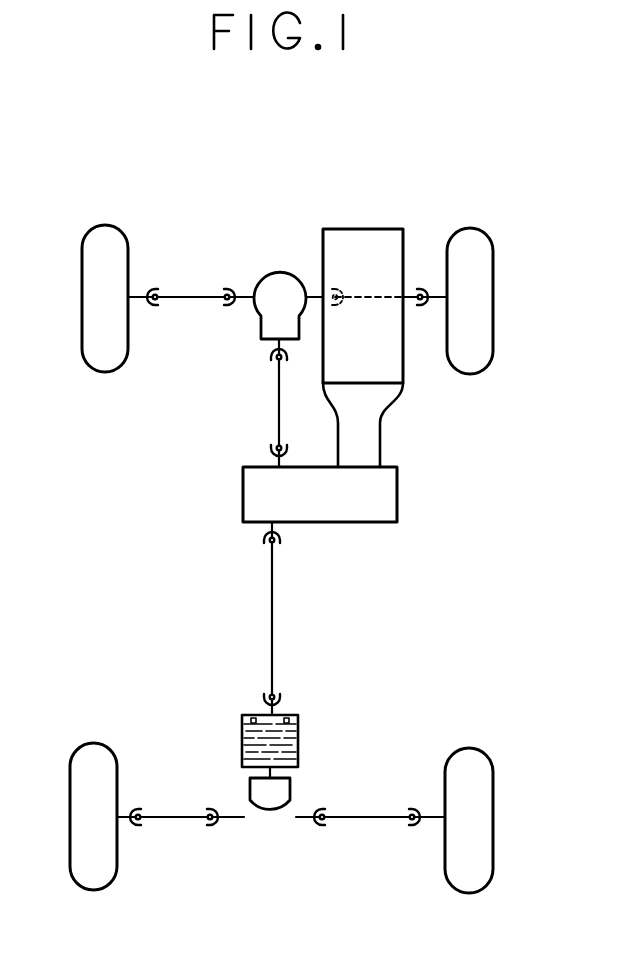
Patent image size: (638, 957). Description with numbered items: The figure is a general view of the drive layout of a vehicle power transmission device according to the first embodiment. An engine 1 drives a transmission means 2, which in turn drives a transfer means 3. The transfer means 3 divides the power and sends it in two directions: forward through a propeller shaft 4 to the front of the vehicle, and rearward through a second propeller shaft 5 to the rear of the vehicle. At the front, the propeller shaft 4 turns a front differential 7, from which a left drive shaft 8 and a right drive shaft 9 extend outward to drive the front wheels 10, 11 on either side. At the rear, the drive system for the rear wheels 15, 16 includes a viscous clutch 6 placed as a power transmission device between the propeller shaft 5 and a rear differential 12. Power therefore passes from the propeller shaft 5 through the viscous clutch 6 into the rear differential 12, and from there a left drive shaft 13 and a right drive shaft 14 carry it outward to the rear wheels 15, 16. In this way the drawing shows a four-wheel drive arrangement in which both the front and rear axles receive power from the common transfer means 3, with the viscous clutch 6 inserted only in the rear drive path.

The engine 1 is at (356, 229).
The transmission means 2 is at (382, 445).
The transfer means 3 is at (390, 501).
The propeller shaft 4 is at (278, 405).
The propeller shaft 5 is at (272, 615).
The viscous clutch 6 is at (242, 745).
The front differential 7 is at (280, 275).
The left drive shaft 8 is at (186, 297).
The right drive shaft 9 is at (411, 297).
The front wheel 10 is at (109, 233).
The front wheel 11 is at (467, 235).
The rear differential 12 is at (268, 839).
The left drive shaft 13 is at (168, 818).
The right drive shaft 14 is at (370, 818).
The rear wheel 15 is at (97, 750).
The rear wheel 16 is at (469, 753).